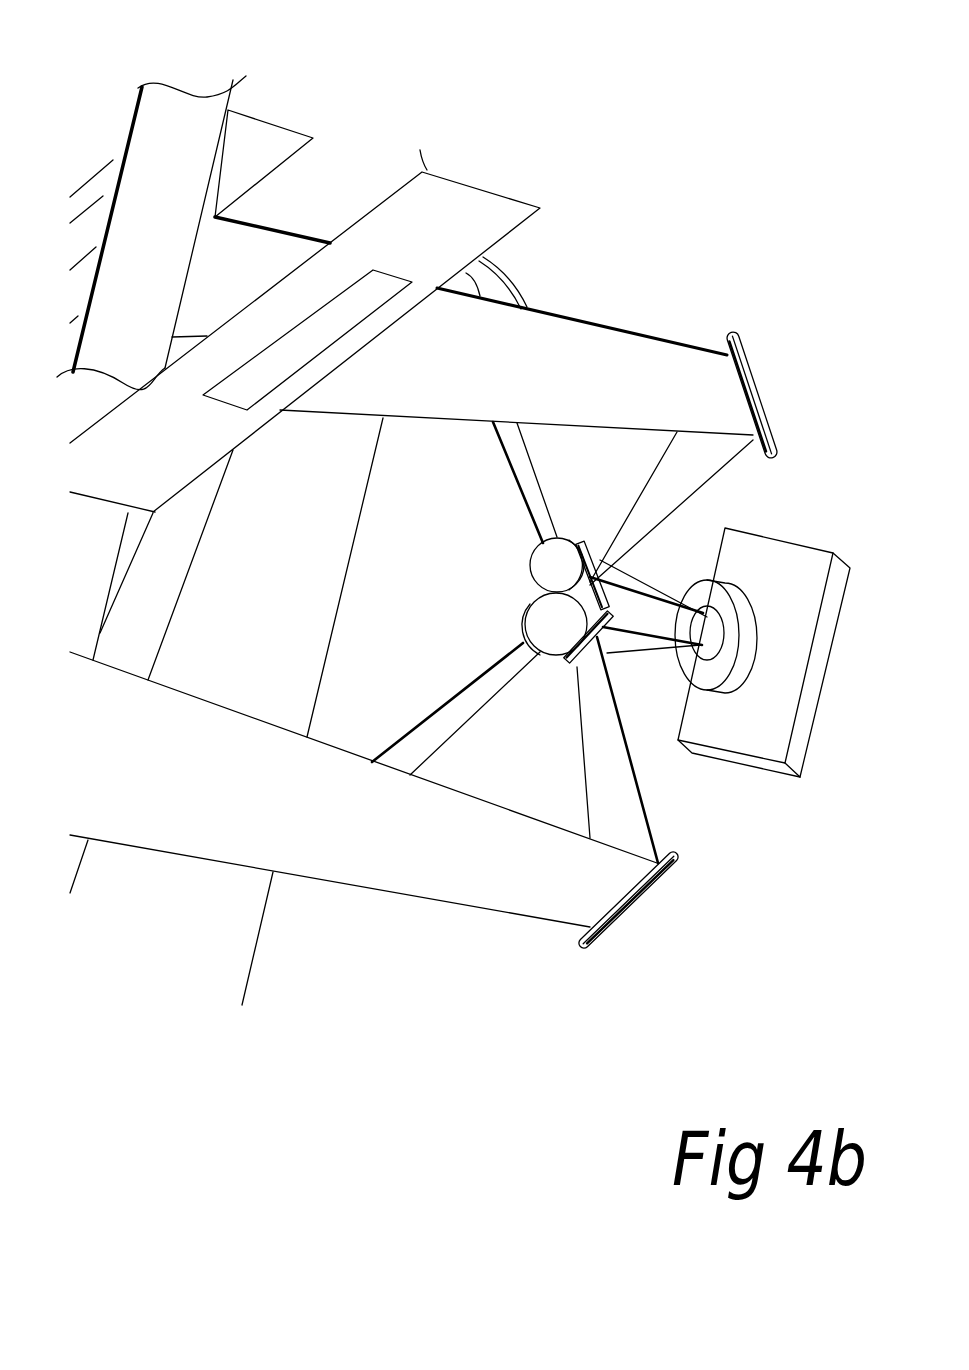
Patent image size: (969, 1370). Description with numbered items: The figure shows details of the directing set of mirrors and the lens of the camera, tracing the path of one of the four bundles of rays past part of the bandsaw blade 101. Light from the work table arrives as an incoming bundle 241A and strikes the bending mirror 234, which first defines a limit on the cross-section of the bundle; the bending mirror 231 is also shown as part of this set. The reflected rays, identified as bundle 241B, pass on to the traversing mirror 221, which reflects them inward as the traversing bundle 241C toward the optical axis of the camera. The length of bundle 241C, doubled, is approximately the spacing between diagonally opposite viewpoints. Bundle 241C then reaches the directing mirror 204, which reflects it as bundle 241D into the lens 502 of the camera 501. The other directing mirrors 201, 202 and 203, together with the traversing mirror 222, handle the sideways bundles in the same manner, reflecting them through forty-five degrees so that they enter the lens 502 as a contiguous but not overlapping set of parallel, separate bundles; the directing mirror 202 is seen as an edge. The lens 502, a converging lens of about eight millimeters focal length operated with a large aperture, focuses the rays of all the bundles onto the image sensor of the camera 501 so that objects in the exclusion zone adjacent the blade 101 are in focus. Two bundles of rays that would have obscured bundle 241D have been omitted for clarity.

The bandsaw blade 101 is at (136, 147).
The bending mirror 231 is at (262, 118).
The bending mirror 234 is at (424, 170).
The incoming bundle of rays 241A is at (248, 935).
The reflected bundle of rays 241B is at (617, 348).
The traversing bundle of rays 241C is at (715, 440).
The directed bundle of rays 241D is at (650, 572).
The traversing mirror 221 is at (736, 333).
The traversing mirror 222 is at (617, 923).
The directing mirror 201 is at (603, 684).
The directing mirror 202 is at (560, 660).
The directing mirror 203 is at (530, 552).
The directing mirror 204 is at (598, 542).
The camera 501 is at (845, 592).
The lens 502 is at (743, 647).